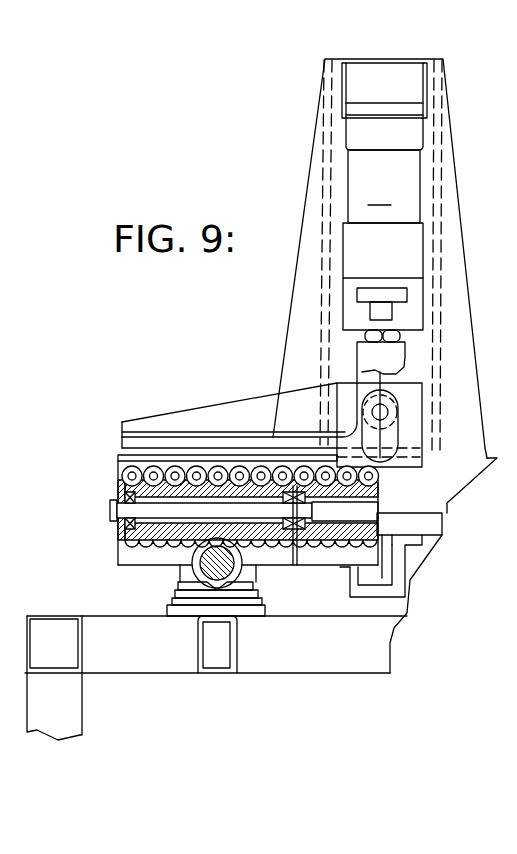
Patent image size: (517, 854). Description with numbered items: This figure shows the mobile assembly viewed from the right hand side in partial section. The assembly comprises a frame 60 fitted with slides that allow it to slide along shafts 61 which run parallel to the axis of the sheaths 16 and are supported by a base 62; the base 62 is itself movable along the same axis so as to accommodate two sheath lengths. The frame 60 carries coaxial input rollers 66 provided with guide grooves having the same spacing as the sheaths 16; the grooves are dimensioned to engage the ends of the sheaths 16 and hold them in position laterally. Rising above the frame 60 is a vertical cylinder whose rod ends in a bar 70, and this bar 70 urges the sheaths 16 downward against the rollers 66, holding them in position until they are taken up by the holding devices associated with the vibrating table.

The frame 60 is at (300, 299).
The bar 70 is at (223, 445).
The sheaths 16 is at (125, 472).
The coaxial input rollers 66 is at (163, 470).
The shafts 61 is at (207, 572).
The base 62 is at (287, 637).